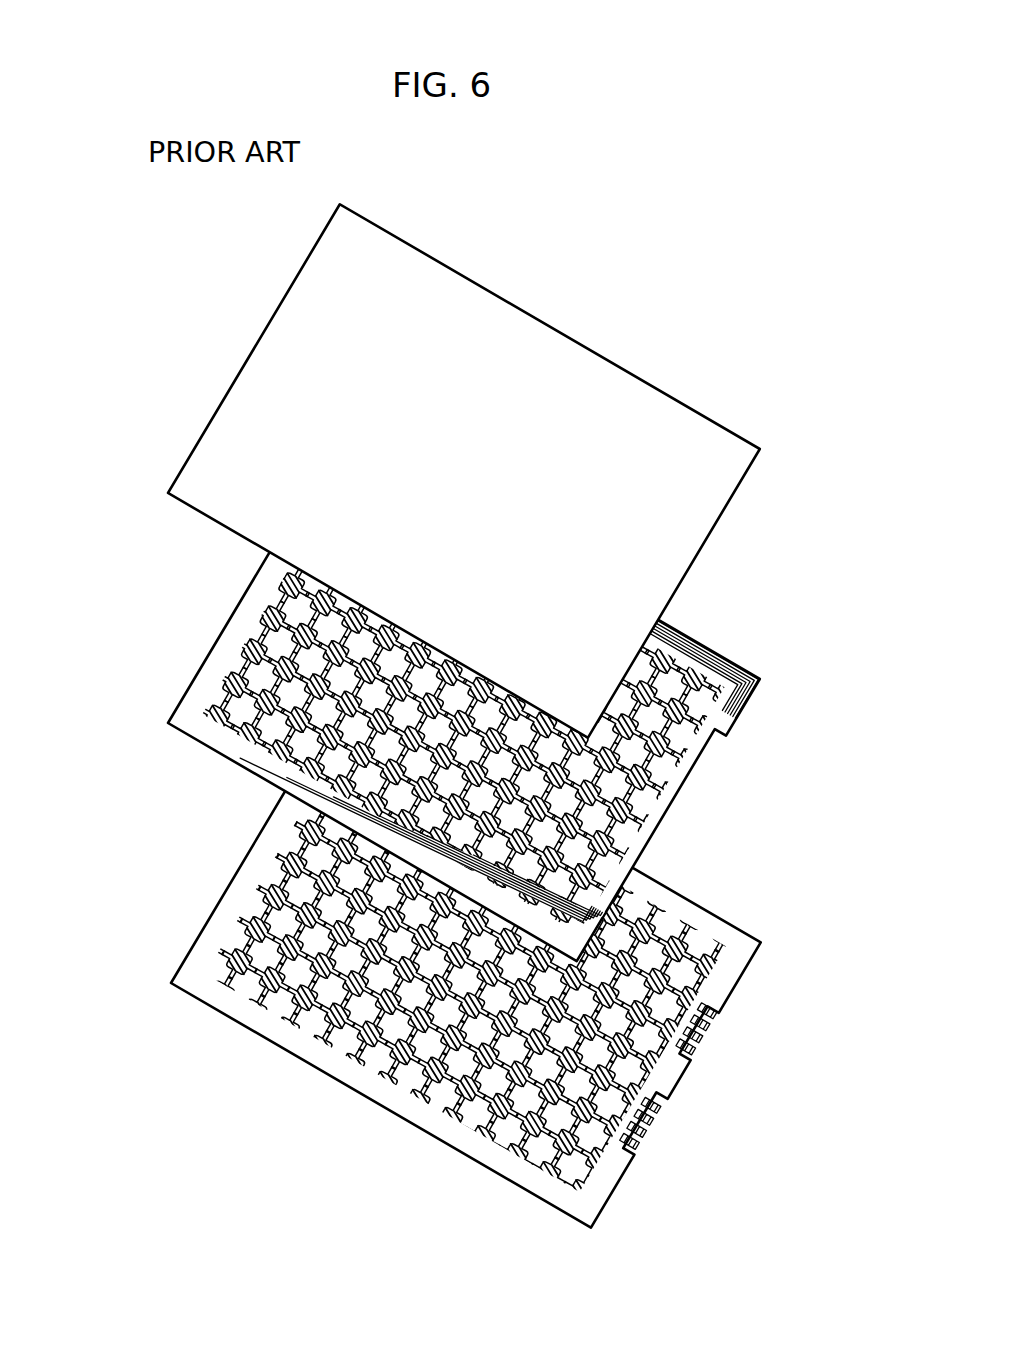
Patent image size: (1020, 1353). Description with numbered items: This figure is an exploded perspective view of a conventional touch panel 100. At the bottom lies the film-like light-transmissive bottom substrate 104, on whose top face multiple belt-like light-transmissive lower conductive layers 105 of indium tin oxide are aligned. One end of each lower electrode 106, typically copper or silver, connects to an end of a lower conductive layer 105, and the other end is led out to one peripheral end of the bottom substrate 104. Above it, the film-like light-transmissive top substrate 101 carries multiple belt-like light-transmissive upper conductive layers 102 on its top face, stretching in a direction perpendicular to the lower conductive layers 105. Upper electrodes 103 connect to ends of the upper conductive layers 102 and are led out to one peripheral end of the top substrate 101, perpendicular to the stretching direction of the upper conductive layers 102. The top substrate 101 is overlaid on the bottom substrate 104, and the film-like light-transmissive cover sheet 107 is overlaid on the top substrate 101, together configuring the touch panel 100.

The touch panel 100 is at (436, 673).
The top substrate 101 is at (700, 743).
The upper conductive layers 102 is at (222, 687).
The upper electrodes 103 is at (742, 677).
The bottom substrate 104 is at (300, 1062).
The lower conductive layers 105 is at (245, 995).
The lower electrodes 106 is at (697, 1048).
The cover sheet 107 is at (610, 340).